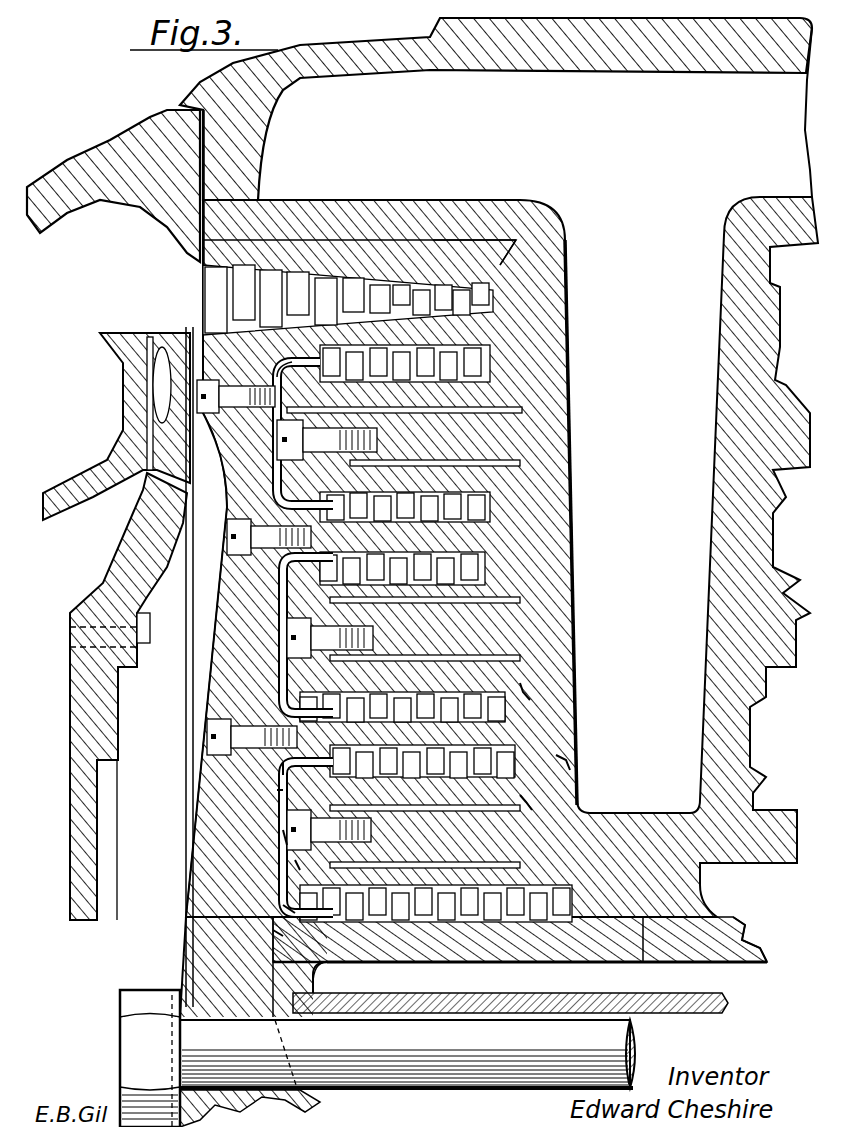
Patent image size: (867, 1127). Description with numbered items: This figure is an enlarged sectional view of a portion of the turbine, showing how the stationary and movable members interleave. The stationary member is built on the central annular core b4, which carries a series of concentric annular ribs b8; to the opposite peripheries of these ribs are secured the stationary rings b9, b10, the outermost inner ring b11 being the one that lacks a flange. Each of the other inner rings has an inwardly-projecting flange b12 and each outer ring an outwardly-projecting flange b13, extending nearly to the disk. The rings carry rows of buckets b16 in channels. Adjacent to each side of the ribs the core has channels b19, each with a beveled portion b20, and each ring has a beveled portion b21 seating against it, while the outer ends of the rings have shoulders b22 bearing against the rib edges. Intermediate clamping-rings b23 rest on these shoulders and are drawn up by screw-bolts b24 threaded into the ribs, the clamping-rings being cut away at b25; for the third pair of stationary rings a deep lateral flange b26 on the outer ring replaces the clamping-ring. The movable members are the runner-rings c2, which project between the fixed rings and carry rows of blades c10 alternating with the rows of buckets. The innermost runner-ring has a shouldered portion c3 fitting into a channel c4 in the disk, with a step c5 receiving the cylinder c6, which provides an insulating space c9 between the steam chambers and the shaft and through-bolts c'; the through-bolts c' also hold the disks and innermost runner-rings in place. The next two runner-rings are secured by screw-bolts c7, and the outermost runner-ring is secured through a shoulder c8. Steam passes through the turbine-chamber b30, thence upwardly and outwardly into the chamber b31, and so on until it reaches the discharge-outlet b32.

The concentric annular ribs b8 is at (440, 200).
The buckets b16 is at (430, 240).
The central annular core b4 is at (453, 513).
The blades c10 is at (330, 283).
The runner-rings c2 is at (500, 326).
The beveled portion of channel b20 is at (520, 683).
The screw-bolts c7 is at (236, 543).
The clamping-rings b23 is at (343, 610).
The deep lateral flange b26 is at (200, 434).
The discharge-outlet b32 is at (195, 304).
The screw-bolts b24 is at (267, 457).
The through-bolts c' is at (392, 882).
The channel c4 is at (273, 1025).
The turbine-chamber b30 is at (530, 915).
The step c5 is at (318, 993).
The cylinder c6 is at (456, 979).
The insulating space c9 is at (663, 956).
The outermost inner ring b11 is at (495, 262).
The shoulder c8 is at (294, 369).
The outwardly-projecting flange b13 is at (283, 767).
The stationary ring b10 is at (277, 790).
The shoulders b22 is at (287, 837).
The cut-away portion b25 is at (300, 867).
The stationary ring b9 is at (290, 917).
The inwardly-projecting flange b12 is at (277, 933).
The shouldered portion c3 is at (280, 962).
The beveled portion b21 is at (523, 692).
The chamber b31 is at (566, 760).
The channels b19 is at (526, 802).